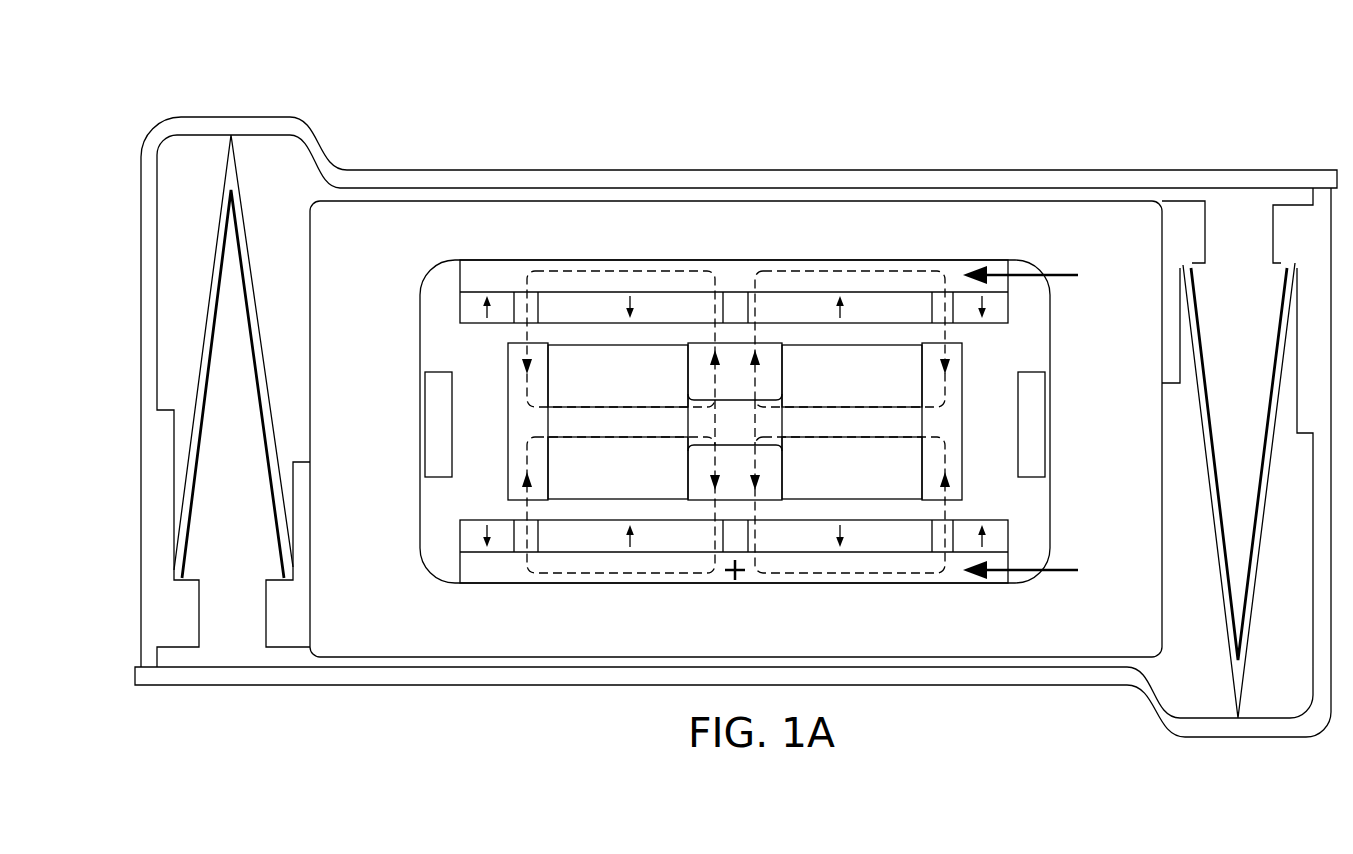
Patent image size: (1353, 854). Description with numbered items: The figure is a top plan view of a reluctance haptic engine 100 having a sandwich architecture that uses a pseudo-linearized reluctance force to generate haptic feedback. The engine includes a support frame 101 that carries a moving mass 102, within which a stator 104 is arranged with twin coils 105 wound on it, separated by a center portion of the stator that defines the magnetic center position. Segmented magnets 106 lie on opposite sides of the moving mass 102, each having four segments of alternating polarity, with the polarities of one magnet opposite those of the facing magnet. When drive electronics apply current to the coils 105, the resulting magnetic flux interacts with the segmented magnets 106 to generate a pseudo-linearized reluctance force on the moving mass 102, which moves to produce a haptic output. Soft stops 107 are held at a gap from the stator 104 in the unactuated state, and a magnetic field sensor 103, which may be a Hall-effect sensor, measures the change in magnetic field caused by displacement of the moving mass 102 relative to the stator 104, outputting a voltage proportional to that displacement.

The reluctance haptic engine 100 is at (702, 390).
The support frame 101 is at (140, 384).
The moving mass 102 is at (732, 450).
The magnetic field sensor 103 is at (740, 576).
The stator 104 is at (953, 452).
The coils 105 is at (565, 392).
The segmented magnets 106 is at (470, 313).
The soft stops 107 is at (1032, 408).